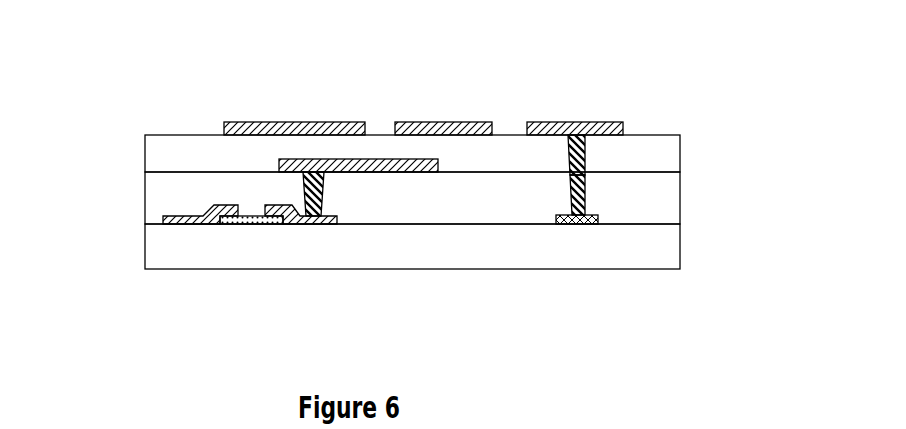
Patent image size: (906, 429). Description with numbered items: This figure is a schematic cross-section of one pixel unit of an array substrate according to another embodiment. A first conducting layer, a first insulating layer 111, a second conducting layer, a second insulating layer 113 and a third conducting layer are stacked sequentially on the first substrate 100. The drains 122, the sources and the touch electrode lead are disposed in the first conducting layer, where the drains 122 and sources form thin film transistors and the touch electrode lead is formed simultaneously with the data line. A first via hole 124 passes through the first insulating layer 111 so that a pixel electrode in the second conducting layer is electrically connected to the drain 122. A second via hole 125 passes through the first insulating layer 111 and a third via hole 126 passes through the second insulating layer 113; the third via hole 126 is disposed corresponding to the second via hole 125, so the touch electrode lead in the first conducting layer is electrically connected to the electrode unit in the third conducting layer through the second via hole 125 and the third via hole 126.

The first substrate 100 is at (150, 252).
The first insulating layer 111 is at (150, 195).
The second insulating layer 113 is at (665, 155).
The drain 122 is at (292, 224).
The first via hole 124 is at (325, 190).
The second via hole 125 is at (577, 200).
The third via hole 126 is at (580, 155).